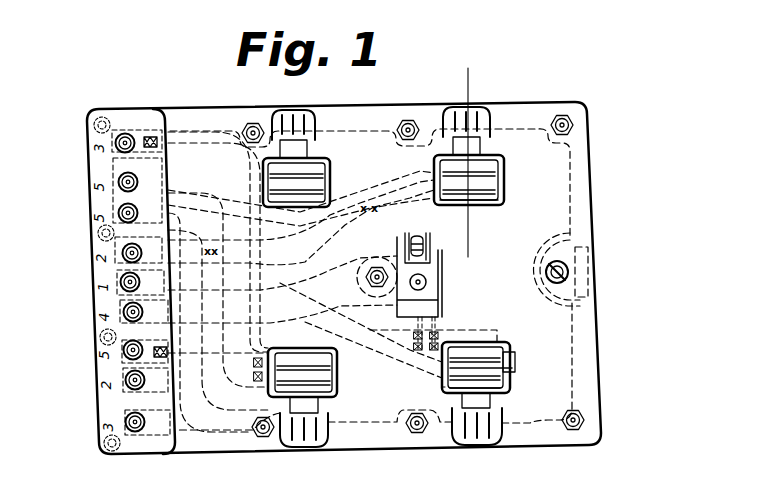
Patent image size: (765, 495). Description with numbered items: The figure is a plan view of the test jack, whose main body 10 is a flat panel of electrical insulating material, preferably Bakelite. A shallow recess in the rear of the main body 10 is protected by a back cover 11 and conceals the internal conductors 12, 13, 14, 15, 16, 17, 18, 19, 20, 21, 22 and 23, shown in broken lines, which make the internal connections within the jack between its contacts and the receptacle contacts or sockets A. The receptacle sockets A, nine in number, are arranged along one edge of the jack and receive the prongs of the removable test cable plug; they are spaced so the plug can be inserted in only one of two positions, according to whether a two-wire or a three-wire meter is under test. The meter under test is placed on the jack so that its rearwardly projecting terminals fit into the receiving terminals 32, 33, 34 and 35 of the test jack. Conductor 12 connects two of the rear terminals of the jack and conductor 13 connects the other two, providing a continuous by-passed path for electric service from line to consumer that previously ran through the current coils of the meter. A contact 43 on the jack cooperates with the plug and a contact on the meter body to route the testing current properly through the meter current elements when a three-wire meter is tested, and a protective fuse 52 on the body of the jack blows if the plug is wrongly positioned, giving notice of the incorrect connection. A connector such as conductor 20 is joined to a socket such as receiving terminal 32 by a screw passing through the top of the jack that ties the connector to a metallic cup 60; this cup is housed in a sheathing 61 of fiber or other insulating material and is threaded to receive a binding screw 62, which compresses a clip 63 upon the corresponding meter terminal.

The main body 10 is at (401, 447).
The back cover 11 is at (468, 68).
The conductor 12 is at (476, 207).
The conductor 13 is at (474, 330).
The conductor 14 is at (250, 223).
The conductor 15 is at (158, 199).
The conductor 16 is at (197, 147).
The conductor 17 is at (215, 416).
The conductor 18 is at (224, 195).
The conductor 19 is at (205, 366).
The conductor 20 is at (312, 268).
The conductor 21 is at (356, 330).
The conductor 22 is at (258, 382).
The conductor 23 is at (209, 206).
The receiving terminal 32 is at (505, 165).
The receiving terminal 33 is at (472, 391).
The receiving terminal 34 is at (337, 389).
The receiving terminal 35 is at (328, 165).
The contact 43 is at (435, 291).
The protective fuse 52 is at (433, 246).
The metallic cup 60 is at (512, 388).
The sheathing 61 is at (445, 390).
The binding screw 62 is at (495, 416).
The clip 63 is at (513, 367).
The receptacle sockets A is at (138, 307).